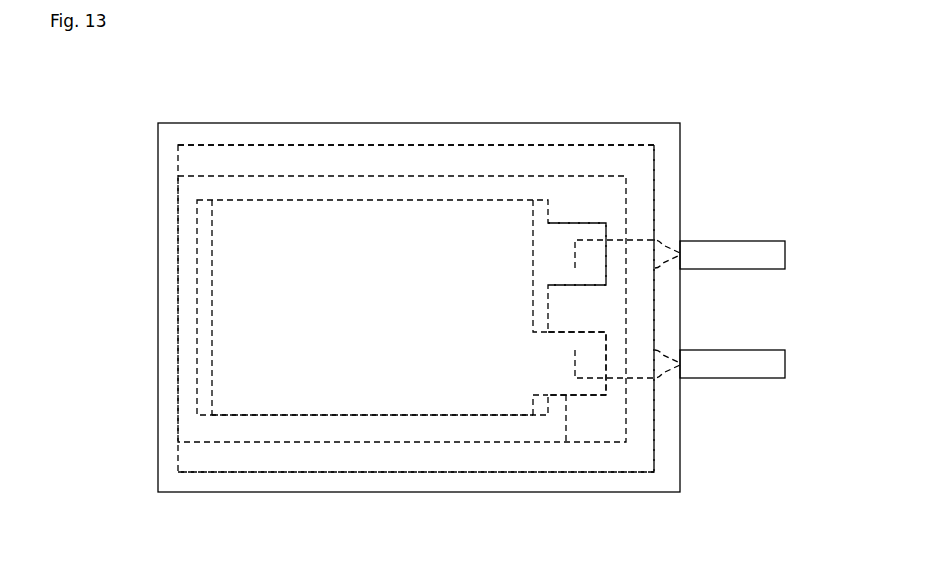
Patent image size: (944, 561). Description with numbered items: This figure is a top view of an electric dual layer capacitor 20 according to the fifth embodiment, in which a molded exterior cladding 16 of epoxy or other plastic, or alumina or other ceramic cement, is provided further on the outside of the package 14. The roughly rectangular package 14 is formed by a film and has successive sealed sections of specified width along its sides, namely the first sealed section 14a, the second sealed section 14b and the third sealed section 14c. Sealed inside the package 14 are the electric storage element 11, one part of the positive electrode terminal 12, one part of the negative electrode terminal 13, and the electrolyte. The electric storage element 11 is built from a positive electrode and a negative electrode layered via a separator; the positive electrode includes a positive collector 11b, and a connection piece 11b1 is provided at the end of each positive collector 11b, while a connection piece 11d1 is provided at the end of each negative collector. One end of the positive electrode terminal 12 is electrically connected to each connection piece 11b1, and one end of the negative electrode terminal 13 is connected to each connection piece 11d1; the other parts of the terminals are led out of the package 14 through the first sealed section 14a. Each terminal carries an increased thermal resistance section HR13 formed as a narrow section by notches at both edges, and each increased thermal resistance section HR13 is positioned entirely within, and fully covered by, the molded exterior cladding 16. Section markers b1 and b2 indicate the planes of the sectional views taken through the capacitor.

The electric dual layer capacitor 20 is at (216, 121).
The molded exterior cladding 16 is at (623, 140).
The package 14 is at (470, 187).
The first sealed section 14a is at (650, 308).
The second sealed section 14b is at (512, 463).
The third sealed section 14c is at (510, 157).
The electric storage element 11 is at (293, 198).
The positive collector 11b is at (332, 390).
The connection piece 11d1 is at (567, 233).
The connection piece 11b1 is at (562, 442).
The increased thermal resistance section HR13 is at (690, 238).
The negative electrode terminal 13 is at (762, 252).
The positive electrode terminal 12 is at (762, 368).
The section line b1 is at (158, 254).
The section line b2 is at (418, 118).